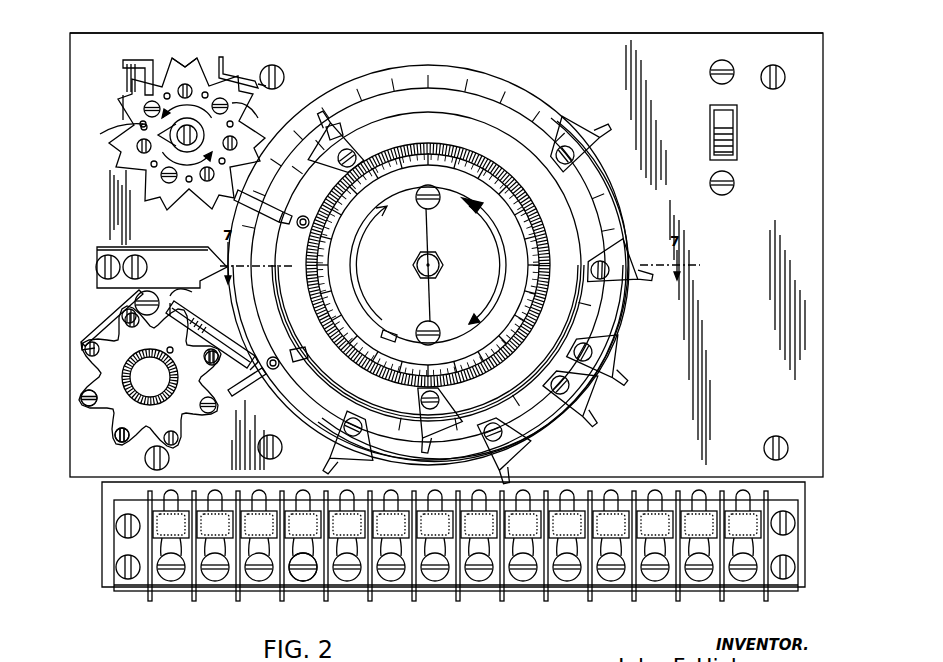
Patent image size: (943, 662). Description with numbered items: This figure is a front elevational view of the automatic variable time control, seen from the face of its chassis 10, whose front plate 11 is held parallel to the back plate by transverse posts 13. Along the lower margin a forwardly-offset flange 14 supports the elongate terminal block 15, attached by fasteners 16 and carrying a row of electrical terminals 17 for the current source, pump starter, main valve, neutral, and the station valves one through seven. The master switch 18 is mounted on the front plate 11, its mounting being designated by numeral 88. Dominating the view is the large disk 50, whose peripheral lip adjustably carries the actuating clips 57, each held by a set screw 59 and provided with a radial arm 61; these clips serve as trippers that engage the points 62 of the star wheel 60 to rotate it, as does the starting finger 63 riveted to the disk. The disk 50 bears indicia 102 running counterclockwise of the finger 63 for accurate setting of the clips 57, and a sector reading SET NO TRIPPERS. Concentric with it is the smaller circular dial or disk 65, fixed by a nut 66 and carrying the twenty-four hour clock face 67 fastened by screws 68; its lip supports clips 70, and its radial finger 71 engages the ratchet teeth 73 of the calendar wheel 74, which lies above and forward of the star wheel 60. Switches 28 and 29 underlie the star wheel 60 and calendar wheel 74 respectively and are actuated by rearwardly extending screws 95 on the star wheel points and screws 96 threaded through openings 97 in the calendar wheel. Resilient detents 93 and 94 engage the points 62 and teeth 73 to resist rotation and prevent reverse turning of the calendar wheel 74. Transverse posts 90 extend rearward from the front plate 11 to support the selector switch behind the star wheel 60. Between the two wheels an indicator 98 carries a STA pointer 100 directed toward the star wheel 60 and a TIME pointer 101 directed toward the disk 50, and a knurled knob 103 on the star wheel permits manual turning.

The chassis 10 is at (798, 33).
The front plate 11 is at (687, 33).
The transverse posts 13 is at (284, 77).
The forwardly-offset flange 14 is at (102, 502).
The terminal block 15 is at (805, 540).
The fasteners 16 is at (116, 568).
The electrical terminals 17 is at (308, 581).
The master switch 18 is at (712, 114).
The switch 28 is at (226, 326).
The switch 29 is at (130, 76).
The disk 50 is at (478, 74).
The actuating elements or clips 57 is at (610, 358).
The set screw 59 is at (614, 287).
The star wheel or rotary member 60 is at (190, 422).
The arms 61 is at (602, 124).
The points or teeth 62 is at (122, 444).
The actuating element or starting finger 63 is at (248, 390).
The circular dial or disk 65 is at (385, 85).
The nut 66 is at (442, 258).
The twenty-four hour dial plate or clock face 67 is at (482, 152).
The screws 68 is at (426, 322).
The elements or clips 70 is at (412, 398).
The actuating element or finger 71 is at (285, 198).
The ratchet teeth 73 is at (188, 58).
The calendar wheel or rotary member 74 is at (118, 163).
The master switch mounting 88 is at (733, 181).
The transverse posts 90 is at (169, 462).
The resilient detent 93 is at (122, 310).
The resilient detent 94 is at (224, 70).
The pins or screws 95 is at (92, 406).
The pins or screws 96 is at (258, 118).
The openings 97 is at (118, 142).
The indicator 98 is at (170, 247).
The STA pointer 100 is at (170, 296).
The TIME pointer 101 is at (218, 248).
The indicia 102 is at (612, 214).
The knurled knob 103 is at (150, 377).